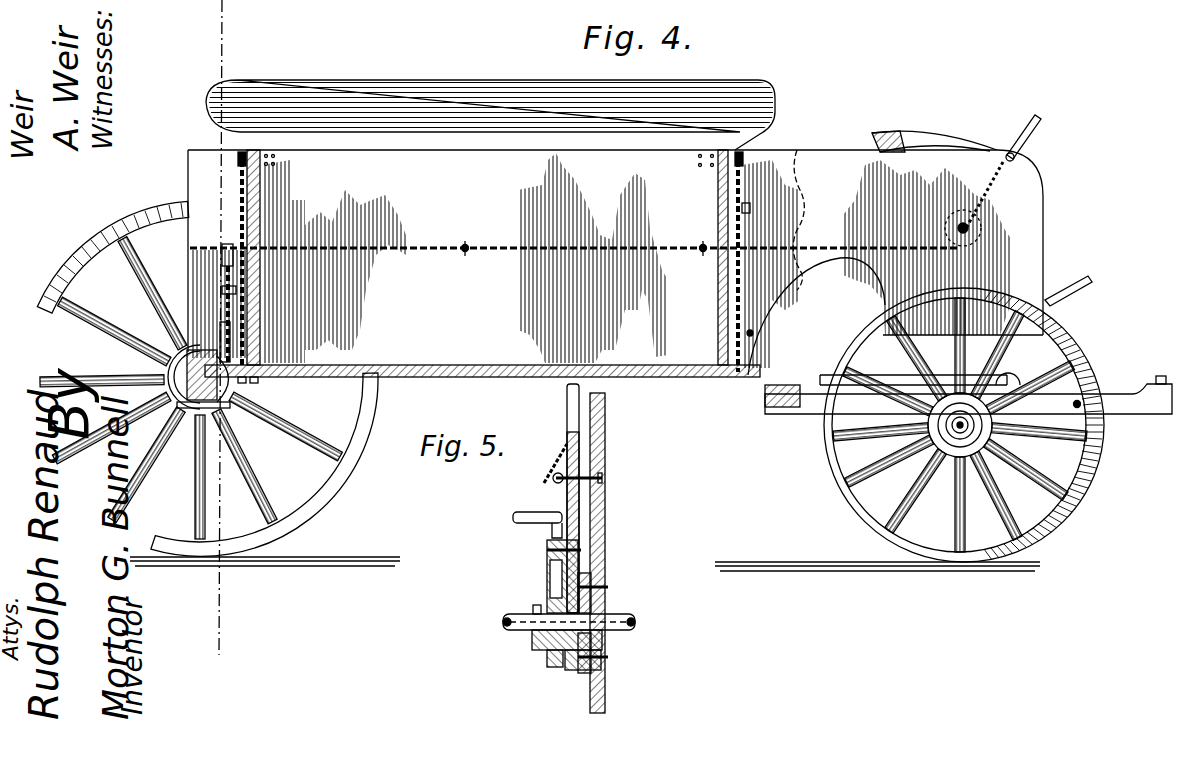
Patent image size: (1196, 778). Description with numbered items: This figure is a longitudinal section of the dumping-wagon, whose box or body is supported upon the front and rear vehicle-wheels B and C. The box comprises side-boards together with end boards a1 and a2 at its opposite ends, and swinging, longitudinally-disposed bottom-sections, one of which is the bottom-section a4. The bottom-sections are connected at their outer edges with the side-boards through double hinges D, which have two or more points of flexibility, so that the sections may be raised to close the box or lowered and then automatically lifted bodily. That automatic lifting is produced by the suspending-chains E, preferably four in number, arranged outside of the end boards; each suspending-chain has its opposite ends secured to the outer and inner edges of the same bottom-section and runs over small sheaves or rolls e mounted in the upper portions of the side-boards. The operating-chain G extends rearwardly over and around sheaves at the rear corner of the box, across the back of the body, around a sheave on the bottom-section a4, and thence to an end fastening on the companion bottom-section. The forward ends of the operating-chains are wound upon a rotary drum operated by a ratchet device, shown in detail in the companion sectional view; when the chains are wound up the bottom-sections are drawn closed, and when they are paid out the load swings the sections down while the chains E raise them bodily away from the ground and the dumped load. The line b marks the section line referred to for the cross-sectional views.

The end board a1 is at (258, 200).
The end board a2 is at (717, 198).
The bottom-section a4 is at (668, 377).
The sheaves or rolls e is at (245, 148).
The operating-chain G is at (227, 287).
The suspending-chains E is at (245, 293).
The double hinges D is at (752, 332).
The front vehicle-wheel B is at (843, 490).
The rear vehicle-wheel C is at (352, 482).
The center line b is at (197, 638).